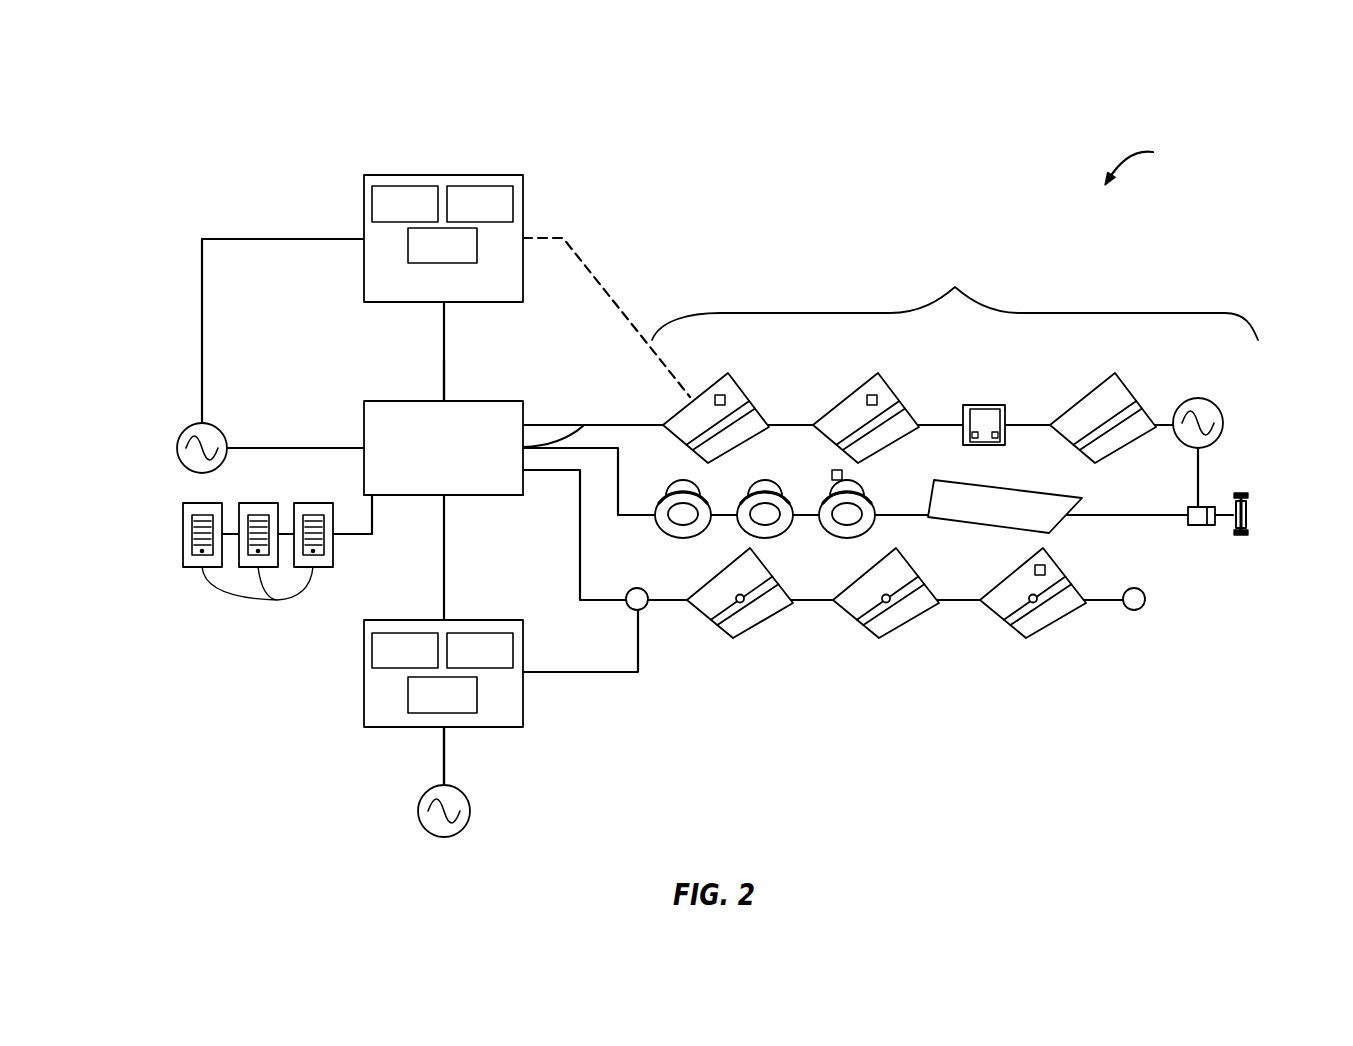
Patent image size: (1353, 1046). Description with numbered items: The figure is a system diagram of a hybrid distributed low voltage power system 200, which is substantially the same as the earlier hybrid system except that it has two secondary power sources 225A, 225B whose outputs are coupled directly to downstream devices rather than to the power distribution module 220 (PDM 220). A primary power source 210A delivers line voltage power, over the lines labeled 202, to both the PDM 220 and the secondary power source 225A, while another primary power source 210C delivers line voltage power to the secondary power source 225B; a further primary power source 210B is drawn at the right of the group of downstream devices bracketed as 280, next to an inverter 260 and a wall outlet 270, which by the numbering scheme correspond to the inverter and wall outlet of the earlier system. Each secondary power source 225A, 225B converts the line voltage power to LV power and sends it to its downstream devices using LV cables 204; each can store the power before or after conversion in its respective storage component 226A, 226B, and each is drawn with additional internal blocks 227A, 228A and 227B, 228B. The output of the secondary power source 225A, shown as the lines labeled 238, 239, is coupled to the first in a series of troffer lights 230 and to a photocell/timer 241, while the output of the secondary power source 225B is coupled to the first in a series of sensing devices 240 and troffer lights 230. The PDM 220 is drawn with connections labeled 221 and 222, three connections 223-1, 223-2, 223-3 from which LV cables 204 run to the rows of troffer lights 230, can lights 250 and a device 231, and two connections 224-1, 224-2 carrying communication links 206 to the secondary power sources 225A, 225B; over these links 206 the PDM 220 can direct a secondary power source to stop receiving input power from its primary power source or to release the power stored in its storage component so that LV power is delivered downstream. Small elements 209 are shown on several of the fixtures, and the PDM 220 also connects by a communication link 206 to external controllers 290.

The hybrid distributed low voltage power system 200 is at (1152, 162).
The power line 202 is at (203, 336).
The LV cables 204 is at (602, 288).
The communication links 206 is at (442, 352).
The sensor 209 is at (720, 395).
The primary power source 210A is at (177, 445).
The primary power source 210B is at (1223, 422).
The primary power source 210C is at (418, 808).
The power distribution module 220 is at (363, 405).
The power input 221 is at (364, 447).
The housing 222 is at (376, 496).
The power output 223-1 is at (527, 422).
The power output 223-2 is at (577, 424).
The power output 223-3 is at (527, 473).
The communication port 224-1 is at (442, 397).
The communication port 224-2 is at (452, 498).
The secondary power source 225A is at (363, 198).
The secondary power source 225B is at (363, 674).
The storage component 226A is at (405, 204).
The storage component 226B is at (405, 650).
The memory 227A is at (480, 204).
The memory 227B is at (480, 650).
The communication interface 228A is at (442, 245).
The communication interface 228B is at (442, 695).
The troffer light 230 is at (702, 394).
The sign 231 is at (1015, 486).
The power line 238 is at (444, 302).
The communication line 239 is at (523, 238).
The sensing device 240 is at (636, 588).
The photocell/timer 241 is at (983, 404).
The can light 250 is at (920, 567).
The inverter 260 is at (1200, 526).
The wall outlet 270 is at (1248, 515).
The load group 280 is at (955, 299).
The external controller 290 is at (258, 571).